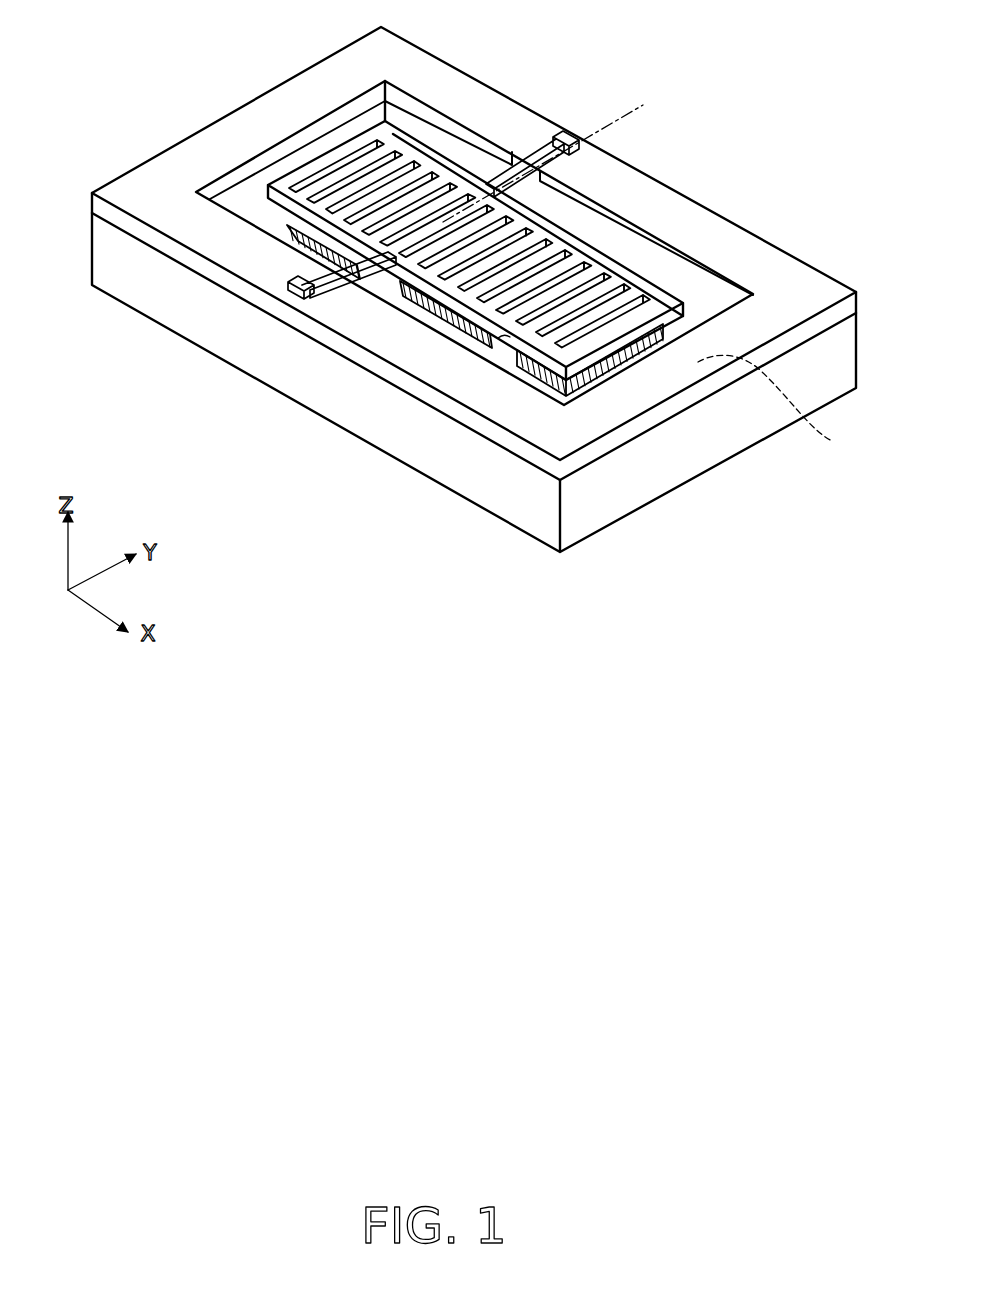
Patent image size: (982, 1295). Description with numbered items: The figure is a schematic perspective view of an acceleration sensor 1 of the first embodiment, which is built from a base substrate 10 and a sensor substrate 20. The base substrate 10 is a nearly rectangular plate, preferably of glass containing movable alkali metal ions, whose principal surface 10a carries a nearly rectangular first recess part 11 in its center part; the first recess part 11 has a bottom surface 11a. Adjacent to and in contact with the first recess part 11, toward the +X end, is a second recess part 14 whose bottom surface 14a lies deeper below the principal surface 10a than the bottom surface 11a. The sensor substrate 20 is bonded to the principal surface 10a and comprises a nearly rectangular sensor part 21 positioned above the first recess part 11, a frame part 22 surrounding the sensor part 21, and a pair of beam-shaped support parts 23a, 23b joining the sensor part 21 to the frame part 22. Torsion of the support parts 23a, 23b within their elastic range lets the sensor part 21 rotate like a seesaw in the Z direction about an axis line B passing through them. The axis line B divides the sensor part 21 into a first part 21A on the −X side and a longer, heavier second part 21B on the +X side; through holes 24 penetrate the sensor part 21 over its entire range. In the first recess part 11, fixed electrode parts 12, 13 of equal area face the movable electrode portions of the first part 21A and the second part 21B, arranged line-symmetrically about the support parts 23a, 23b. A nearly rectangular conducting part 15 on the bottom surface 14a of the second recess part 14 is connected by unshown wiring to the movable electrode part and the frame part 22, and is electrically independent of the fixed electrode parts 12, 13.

The acceleration sensor 1 is at (484, 277).
The base substrate 10 is at (484, 372).
The principal surface 10a is at (787, 405).
The first recess part 11 is at (273, 153).
The bottom surface of the first recess part 11a is at (247, 210).
The fixed electrode part 12 is at (290, 238).
The fixed electrode part 13 is at (434, 313).
The second recess part 14 is at (583, 253).
The bottom surface of the second recess part 14a is at (684, 327).
The conducting part 15 is at (527, 380).
The sensor substrate 20 is at (474, 241).
The sensor part 21 is at (426, 213).
The first part 21A is at (362, 146).
The second part 21B is at (572, 262).
The frame part 22 is at (470, 62).
The support part 23a is at (556, 138).
The support part 23b is at (298, 292).
The through holes 24 is at (512, 340).
The axis line B is at (624, 105).